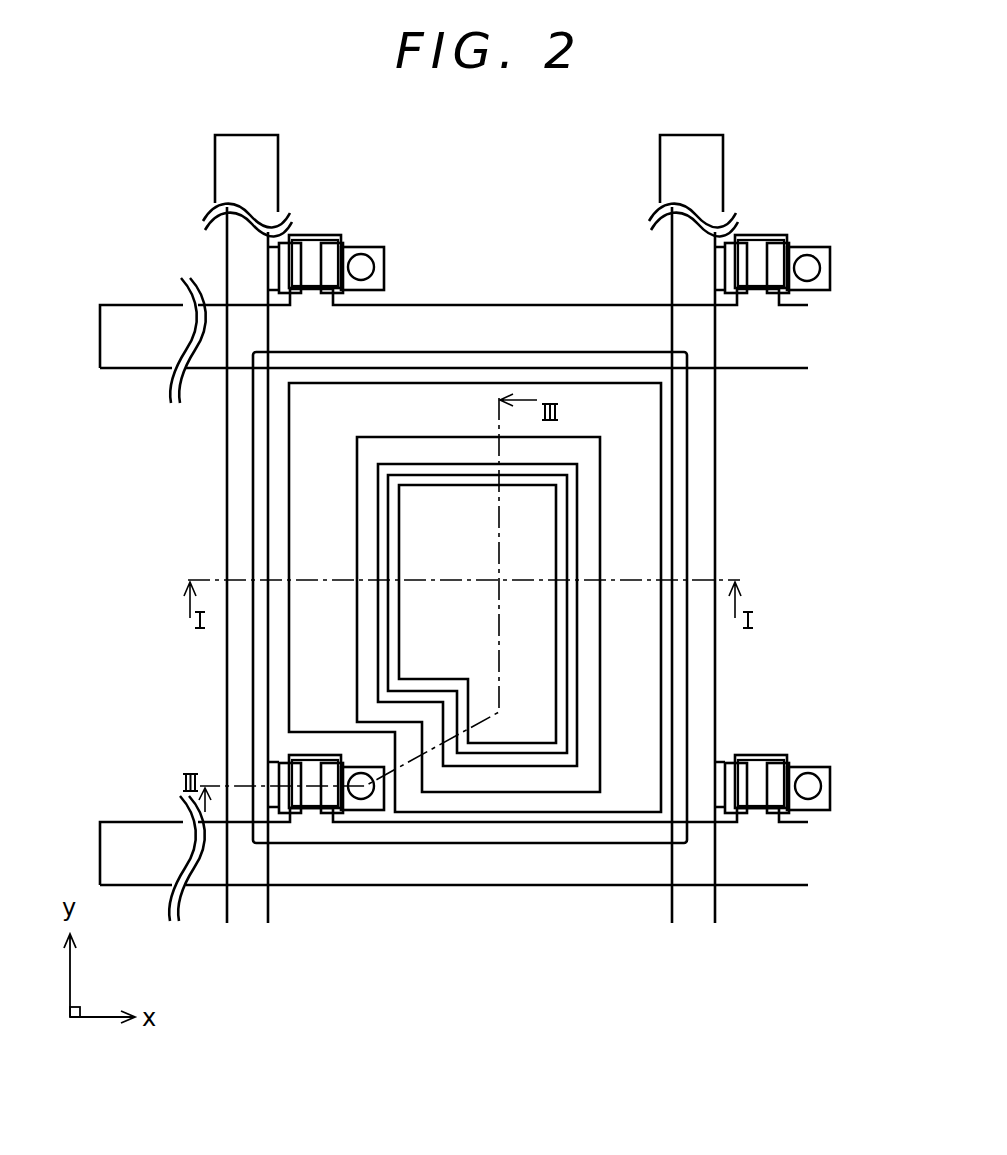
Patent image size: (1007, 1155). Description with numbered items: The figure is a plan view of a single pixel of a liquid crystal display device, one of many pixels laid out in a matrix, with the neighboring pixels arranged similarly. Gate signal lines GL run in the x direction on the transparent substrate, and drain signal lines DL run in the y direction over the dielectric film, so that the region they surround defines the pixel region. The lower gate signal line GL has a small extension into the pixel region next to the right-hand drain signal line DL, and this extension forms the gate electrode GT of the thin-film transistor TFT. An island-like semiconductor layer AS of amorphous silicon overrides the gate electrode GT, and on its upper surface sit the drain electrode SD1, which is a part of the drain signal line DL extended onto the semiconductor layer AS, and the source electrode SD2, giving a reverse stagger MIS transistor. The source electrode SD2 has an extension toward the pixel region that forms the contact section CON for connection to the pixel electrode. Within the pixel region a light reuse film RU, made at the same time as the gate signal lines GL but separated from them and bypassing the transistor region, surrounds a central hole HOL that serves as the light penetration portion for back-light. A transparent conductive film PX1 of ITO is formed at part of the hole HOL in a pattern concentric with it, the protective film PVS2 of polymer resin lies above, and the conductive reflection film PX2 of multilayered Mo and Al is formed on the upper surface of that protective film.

The drain signal line DL is at (268, 171).
The gate signal line GL is at (484, 322).
The conductive reflection film PX2 is at (688, 445).
The transparent conductive film PX1 is at (578, 717).
The protective film PVS2 is at (593, 618).
The light reuse film RU is at (645, 532).
The hole HOL is at (572, 793).
The gate electrode GT is at (300, 757).
The semiconductor layer AS is at (310, 803).
The drain electrode SD1 is at (273, 778).
The source electrode SD2 is at (357, 803).
The contact section CON is at (367, 797).
The thin-film transistor TFT is at (313, 823).